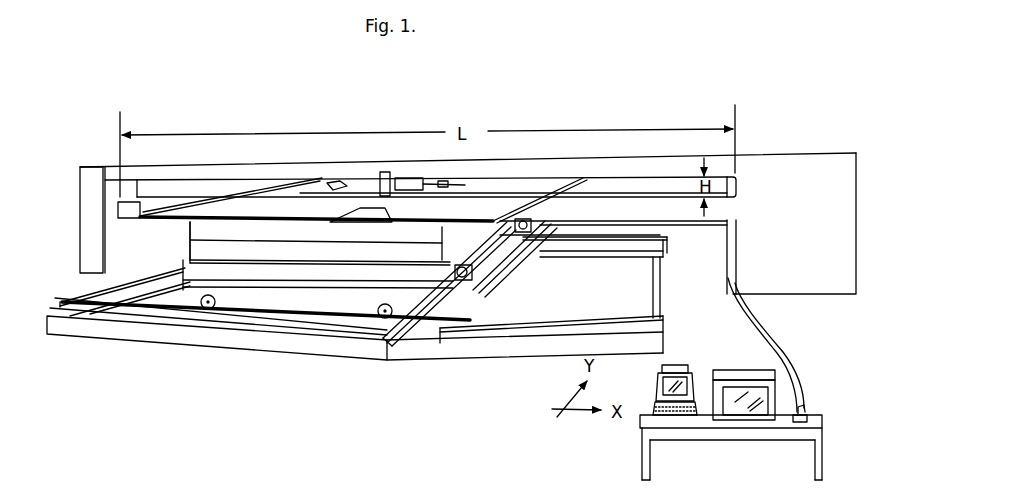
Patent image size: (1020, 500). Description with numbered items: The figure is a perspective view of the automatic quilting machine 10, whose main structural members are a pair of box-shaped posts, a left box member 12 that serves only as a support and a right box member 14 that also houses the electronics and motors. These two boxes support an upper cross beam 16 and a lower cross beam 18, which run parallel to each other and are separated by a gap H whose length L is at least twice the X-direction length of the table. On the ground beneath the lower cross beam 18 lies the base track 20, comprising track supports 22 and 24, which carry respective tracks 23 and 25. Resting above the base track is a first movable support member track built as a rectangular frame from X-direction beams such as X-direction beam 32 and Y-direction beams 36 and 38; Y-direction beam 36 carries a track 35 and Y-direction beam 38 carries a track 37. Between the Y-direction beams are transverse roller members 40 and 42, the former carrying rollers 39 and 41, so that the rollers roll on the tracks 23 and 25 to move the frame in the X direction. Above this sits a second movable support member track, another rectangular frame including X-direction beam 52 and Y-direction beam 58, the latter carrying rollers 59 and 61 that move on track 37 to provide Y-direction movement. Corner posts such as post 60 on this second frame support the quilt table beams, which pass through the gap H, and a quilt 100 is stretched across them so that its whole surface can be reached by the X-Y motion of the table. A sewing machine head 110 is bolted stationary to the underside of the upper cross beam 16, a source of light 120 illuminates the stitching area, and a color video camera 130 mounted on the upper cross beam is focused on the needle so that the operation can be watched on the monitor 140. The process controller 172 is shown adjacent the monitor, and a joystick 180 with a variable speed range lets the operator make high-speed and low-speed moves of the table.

The automatic quilting machine 10 is at (668, 149).
The left box member 12 is at (90, 182).
The right box member 14 is at (847, 220).
The upper cross beam 16 is at (623, 167).
The lower cross beam 18 is at (622, 215).
The base track 20 is at (668, 309).
The track support 22 is at (537, 340).
The track 23 is at (503, 323).
The track support 24 is at (635, 252).
The track 25 is at (652, 238).
The X-direction beam 32 is at (310, 348).
The track 35 is at (145, 286).
The Y-direction beam 36 is at (110, 305).
The track 37 is at (466, 282).
The Y-direction beam 38 is at (490, 276).
The roller 39 is at (200, 308).
The transverse roller member 40 is at (263, 298).
The roller 41 is at (379, 318).
The transverse roller member 42 is at (487, 255).
The X-direction beam 52 is at (440, 278).
The Y-direction beam 58 is at (490, 275).
The roller 59 is at (460, 263).
The post 60 is at (188, 232).
The roller 61 is at (580, 218).
The quilt 100 is at (345, 215).
The sewing machine head 110 is at (412, 205).
The source of light 120 is at (342, 186).
The color video camera 130 is at (387, 178).
The monitor 140 is at (725, 412).
The process controller 172 is at (657, 398).
The joystick 180 is at (807, 412).